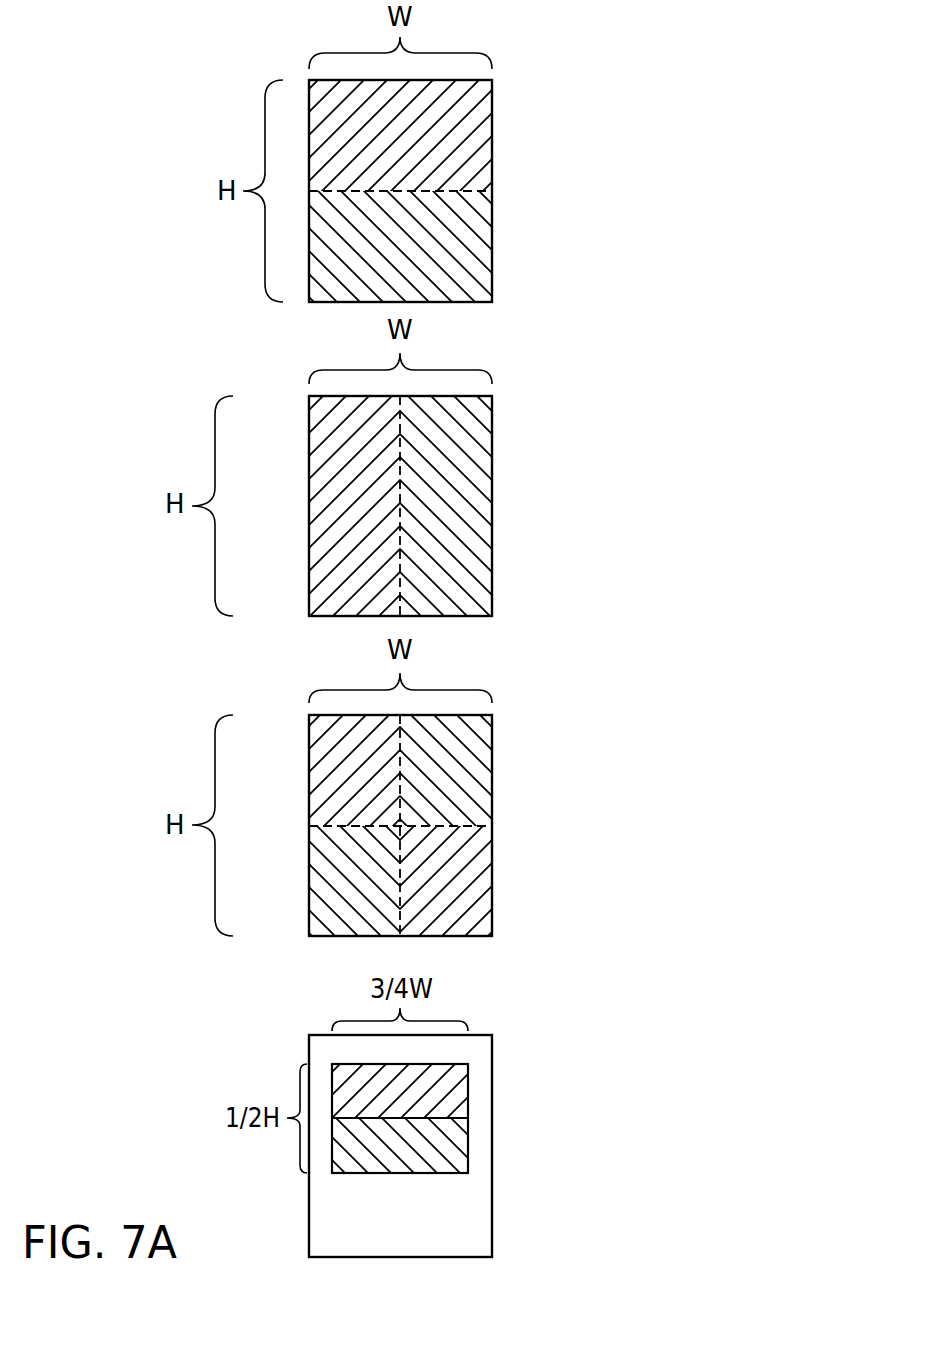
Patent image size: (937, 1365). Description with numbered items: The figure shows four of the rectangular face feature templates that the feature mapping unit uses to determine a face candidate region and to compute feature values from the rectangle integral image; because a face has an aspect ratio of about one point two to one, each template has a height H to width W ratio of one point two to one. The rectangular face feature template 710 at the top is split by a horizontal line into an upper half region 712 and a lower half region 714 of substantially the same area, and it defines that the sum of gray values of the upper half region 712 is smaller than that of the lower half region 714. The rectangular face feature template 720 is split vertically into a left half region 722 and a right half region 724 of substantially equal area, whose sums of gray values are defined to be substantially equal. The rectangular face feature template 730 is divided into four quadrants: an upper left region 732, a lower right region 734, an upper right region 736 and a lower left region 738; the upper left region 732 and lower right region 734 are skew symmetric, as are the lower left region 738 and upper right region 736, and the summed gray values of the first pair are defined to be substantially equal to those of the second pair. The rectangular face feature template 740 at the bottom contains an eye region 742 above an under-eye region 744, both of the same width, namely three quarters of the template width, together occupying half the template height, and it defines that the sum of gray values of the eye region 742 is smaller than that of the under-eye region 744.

The rectangular face feature template 710 is at (445, 196).
The upper half region 712 is at (477, 126).
The lower half region 714 is at (477, 236).
The rectangular face feature template 720 is at (407, 510).
The left half region 722 is at (324, 508).
The right half region 724 is at (477, 508).
The rectangular face feature template 730 is at (407, 831).
The upper left region 732 is at (324, 781).
The lower right region 734 is at (477, 863).
The upper right region 736 is at (477, 780).
The lower left region 738 is at (324, 864).
The rectangular face feature template 740 is at (445, 1151).
The eye region 742 is at (458, 1082).
The under-eye region 744 is at (458, 1139).